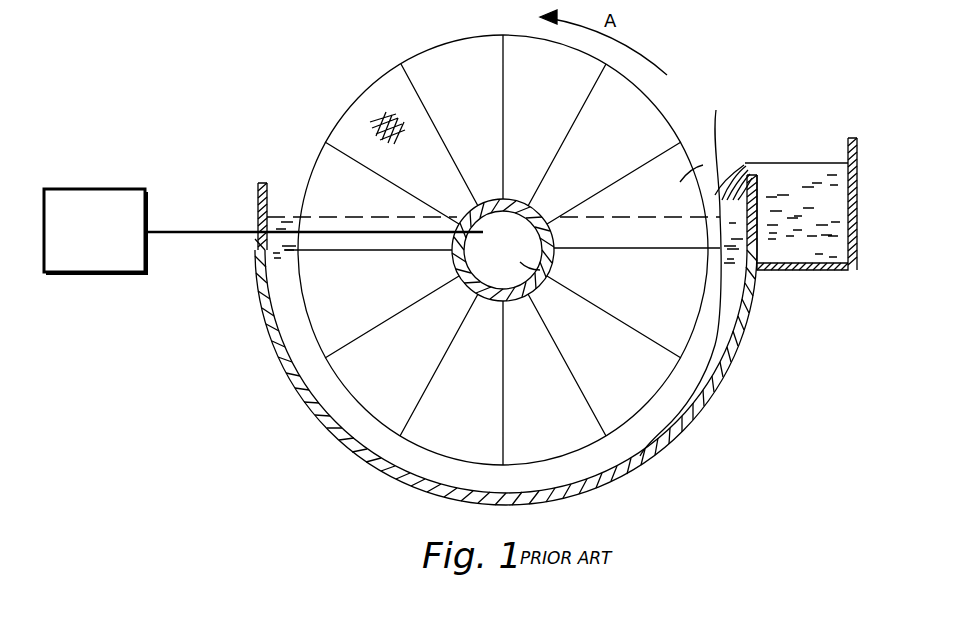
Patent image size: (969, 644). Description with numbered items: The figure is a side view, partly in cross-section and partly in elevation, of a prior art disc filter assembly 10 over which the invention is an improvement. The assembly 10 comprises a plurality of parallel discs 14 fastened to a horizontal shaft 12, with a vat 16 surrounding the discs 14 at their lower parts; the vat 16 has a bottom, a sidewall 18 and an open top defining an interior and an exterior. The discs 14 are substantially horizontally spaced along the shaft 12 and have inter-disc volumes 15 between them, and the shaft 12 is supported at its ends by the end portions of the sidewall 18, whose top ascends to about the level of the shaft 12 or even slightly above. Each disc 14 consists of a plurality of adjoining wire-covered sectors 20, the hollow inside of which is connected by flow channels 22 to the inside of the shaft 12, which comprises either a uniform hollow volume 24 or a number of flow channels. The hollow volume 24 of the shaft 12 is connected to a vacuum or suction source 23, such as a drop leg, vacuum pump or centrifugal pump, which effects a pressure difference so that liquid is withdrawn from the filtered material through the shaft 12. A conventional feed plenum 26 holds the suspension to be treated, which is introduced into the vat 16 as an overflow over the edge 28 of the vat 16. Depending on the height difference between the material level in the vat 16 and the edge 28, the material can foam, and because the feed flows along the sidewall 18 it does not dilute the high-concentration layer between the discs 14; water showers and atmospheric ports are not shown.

The disc filter assembly 10 is at (447, 250).
The horizontal shaft 12 is at (457, 273).
The discs 14 is at (310, 163).
The inter-disc volumes 15 is at (670, 291).
The vat 16 is at (337, 412).
The sidewall 18 is at (262, 262).
The wire-covered sectors 20 is at (658, 130).
The flow channels 22 is at (555, 273).
The vacuum or suction source 23 is at (102, 188).
The uniform hollow volume 24 is at (552, 280).
The feed plenum 26 is at (830, 198).
The edge 28 is at (755, 168).